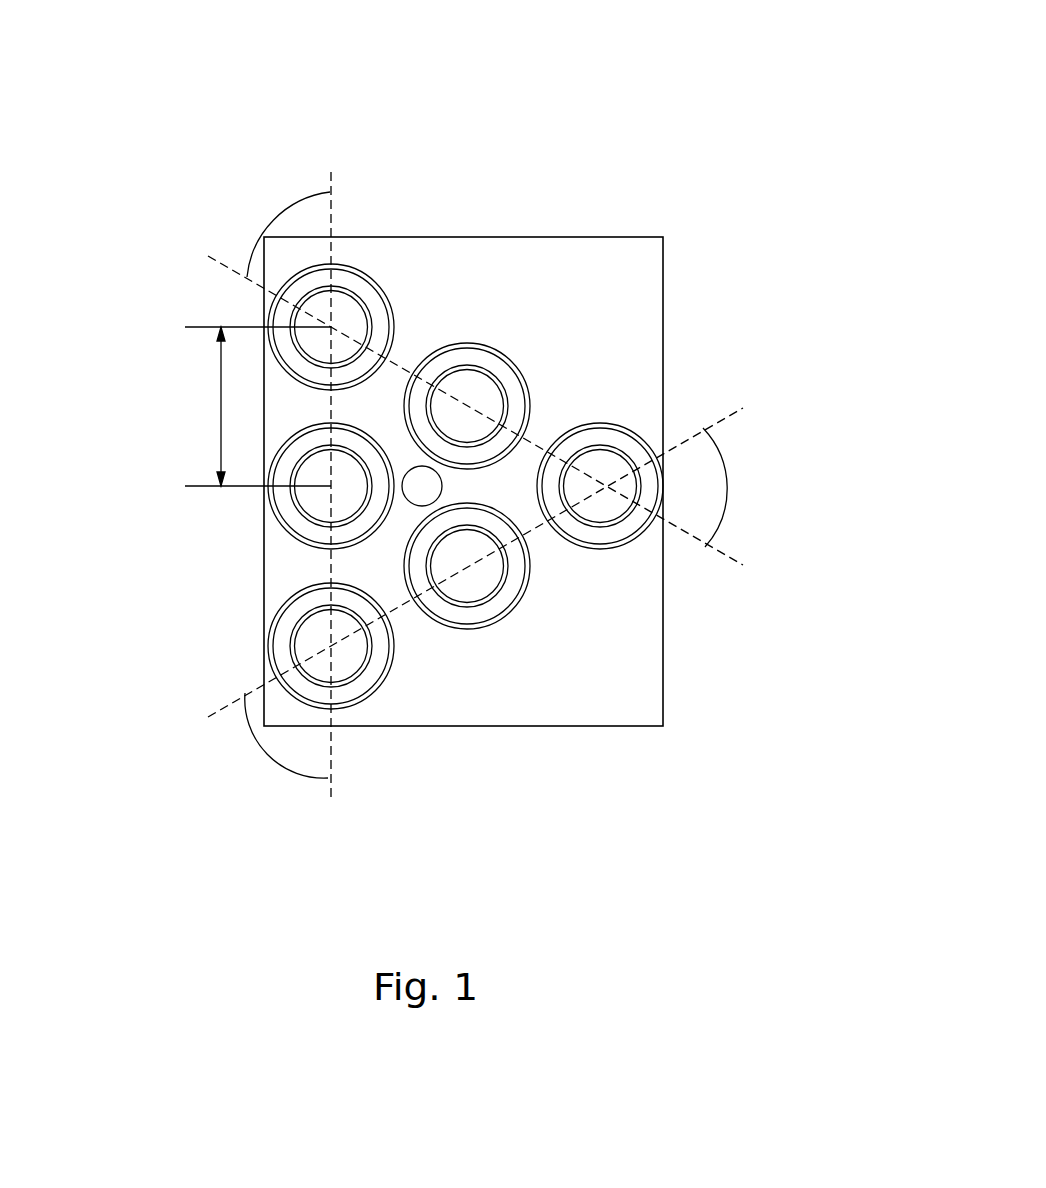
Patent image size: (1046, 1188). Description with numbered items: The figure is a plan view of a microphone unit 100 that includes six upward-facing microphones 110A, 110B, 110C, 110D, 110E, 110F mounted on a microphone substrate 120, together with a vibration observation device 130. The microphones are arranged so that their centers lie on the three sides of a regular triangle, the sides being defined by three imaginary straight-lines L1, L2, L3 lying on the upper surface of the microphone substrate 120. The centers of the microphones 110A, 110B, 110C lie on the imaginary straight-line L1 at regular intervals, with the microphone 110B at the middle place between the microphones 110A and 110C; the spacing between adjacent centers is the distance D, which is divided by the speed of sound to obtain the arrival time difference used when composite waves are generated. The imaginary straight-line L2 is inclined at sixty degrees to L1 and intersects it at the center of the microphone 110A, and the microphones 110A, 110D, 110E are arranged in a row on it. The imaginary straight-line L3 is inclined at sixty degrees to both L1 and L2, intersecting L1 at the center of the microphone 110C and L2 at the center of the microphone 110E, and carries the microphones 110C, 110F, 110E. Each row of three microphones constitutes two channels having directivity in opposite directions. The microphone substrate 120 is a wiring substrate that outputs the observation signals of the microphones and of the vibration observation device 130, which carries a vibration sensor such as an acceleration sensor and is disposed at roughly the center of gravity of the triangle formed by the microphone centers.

The microphone unit 100 is at (737, 117).
The microphone 110A is at (273, 307).
The microphone 110B is at (282, 524).
The microphone 110C is at (273, 640).
The microphone 110D is at (470, 343).
The microphone 110E is at (613, 425).
The microphone 110F is at (477, 627).
The microphone substrate 120 is at (640, 642).
The vibration observation device 130 is at (408, 502).
The imaginary straight-line L1 is at (332, 208).
The imaginary straight-line L2 is at (728, 558).
The imaginary straight-line L3 is at (213, 710).
The distance D is at (253, 406).